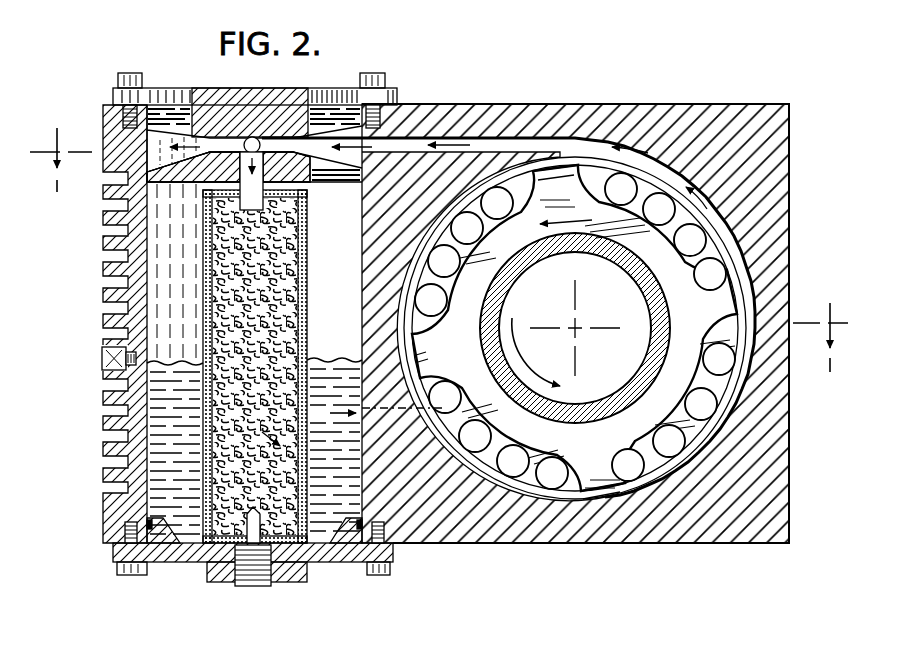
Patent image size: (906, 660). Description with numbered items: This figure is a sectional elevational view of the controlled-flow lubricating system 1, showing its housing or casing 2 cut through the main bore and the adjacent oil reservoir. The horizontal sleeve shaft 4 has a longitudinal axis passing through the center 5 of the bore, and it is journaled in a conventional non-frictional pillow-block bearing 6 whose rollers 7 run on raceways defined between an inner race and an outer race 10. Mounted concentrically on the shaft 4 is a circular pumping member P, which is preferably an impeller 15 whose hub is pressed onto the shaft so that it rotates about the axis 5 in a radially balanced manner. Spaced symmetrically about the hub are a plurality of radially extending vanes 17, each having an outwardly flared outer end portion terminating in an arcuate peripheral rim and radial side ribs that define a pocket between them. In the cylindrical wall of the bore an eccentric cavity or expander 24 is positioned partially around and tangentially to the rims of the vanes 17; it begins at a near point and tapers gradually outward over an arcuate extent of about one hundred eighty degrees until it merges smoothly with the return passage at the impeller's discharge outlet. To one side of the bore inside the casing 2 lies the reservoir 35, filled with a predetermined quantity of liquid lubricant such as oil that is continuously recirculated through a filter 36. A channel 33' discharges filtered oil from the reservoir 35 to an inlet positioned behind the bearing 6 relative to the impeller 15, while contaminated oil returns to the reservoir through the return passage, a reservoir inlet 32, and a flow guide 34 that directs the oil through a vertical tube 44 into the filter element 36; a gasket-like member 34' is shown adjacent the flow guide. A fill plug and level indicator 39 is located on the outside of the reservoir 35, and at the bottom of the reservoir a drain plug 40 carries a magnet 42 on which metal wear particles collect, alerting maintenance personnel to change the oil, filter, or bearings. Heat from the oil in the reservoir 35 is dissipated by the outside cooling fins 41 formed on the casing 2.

The controlled-flow lubricating system 1 is at (641, 98).
The housing or casing 2 is at (717, 102).
The horizontal sleeve shaft 4 is at (662, 332).
The center of bore 5 is at (577, 328).
The bearing 6 is at (706, 273).
The rollers 7 is at (662, 438).
The outer race 10 is at (730, 257).
The impeller 15 is at (446, 341).
The vanes 17 is at (547, 165).
The eccentric cavity (expander) 24 is at (750, 372).
The reservoir inlet 32 is at (324, 125).
The channel 33' is at (381, 370).
The flow guide 34 is at (255, 89).
The gasket 34' is at (124, 120).
The reservoir 35 is at (320, 255).
The filter 36 is at (272, 318).
The fill plug and level indicator 39 is at (101, 355).
The drain plug 40 is at (246, 578).
The cooling fins 41 is at (104, 267).
The magnet 42 is at (302, 554).
The vertical tube 44 is at (265, 200).
The pumping member P is at (633, 235).